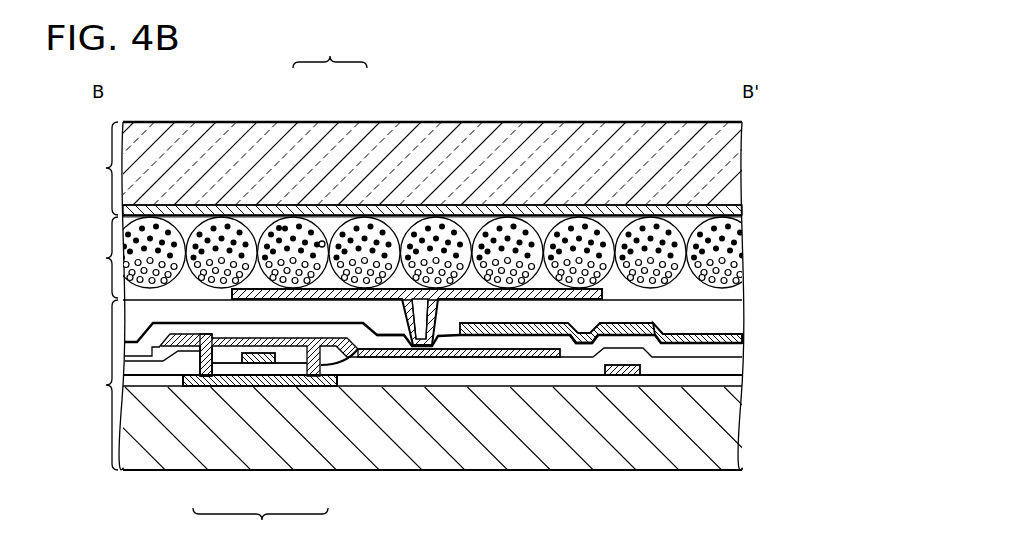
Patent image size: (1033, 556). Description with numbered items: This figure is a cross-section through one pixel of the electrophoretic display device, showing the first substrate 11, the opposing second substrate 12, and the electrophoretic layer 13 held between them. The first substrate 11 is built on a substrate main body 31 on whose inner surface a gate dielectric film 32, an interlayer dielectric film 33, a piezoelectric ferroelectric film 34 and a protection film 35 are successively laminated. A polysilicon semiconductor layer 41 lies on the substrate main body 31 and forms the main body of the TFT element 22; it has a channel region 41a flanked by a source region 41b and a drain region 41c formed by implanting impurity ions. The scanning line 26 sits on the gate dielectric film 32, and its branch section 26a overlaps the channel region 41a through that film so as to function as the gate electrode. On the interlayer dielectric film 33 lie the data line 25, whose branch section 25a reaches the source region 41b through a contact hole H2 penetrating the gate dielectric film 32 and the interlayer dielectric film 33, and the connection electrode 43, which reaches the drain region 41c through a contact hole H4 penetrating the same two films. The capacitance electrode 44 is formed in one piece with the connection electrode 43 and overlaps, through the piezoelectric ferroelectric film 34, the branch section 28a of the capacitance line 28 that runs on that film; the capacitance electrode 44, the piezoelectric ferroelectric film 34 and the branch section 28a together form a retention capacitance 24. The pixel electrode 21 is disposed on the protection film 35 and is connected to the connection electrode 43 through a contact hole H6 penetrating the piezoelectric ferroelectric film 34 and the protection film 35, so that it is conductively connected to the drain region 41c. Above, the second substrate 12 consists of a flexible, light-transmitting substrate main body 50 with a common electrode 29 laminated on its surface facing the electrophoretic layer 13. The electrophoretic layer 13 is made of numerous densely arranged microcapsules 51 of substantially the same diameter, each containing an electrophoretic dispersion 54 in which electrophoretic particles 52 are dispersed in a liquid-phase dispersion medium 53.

The first substrate 11 is at (90, 385).
The second substrate 12 is at (90, 168).
The electrophoretic layer 13 is at (90, 257).
The pixel electrode 21 is at (421, 248).
The TFT element 22 is at (341, 376).
The retention capacitance 24 is at (593, 349).
The data line 25 is at (175, 333).
The branch section 25a is at (199, 333).
The scanning line 26 is at (625, 374).
The branch section 26a is at (258, 346).
The capacitance line 28 is at (662, 333).
The branch section 28a is at (490, 327).
The common electrode 29 is at (742, 209).
The substrate main body 31 is at (734, 433).
The gate dielectric film 32 is at (734, 380).
The interlayer dielectric film 33 is at (734, 367).
The piezoelectric ferroelectric film 34 is at (734, 352).
The protection film 35 is at (734, 318).
The semiconductor layer 41 is at (260, 529).
The channel region 41a is at (258, 364).
The source region 41b is at (220, 364).
The drain region 41c is at (301, 366).
The connection electrode 43 is at (392, 333).
The capacitance electrode 44 is at (478, 357).
The substrate main body 50 is at (735, 160).
The microcapsule 51 is at (264, 218).
The electrophoretic particles 52 is at (303, 262).
The liquid-phase dispersion medium 53 is at (322, 243).
The electrophoretic dispersion 54 is at (330, 48).
The contact hole H2 is at (197, 357).
The contact hole H4 is at (417, 344).
The contact hole H6 is at (424, 348).